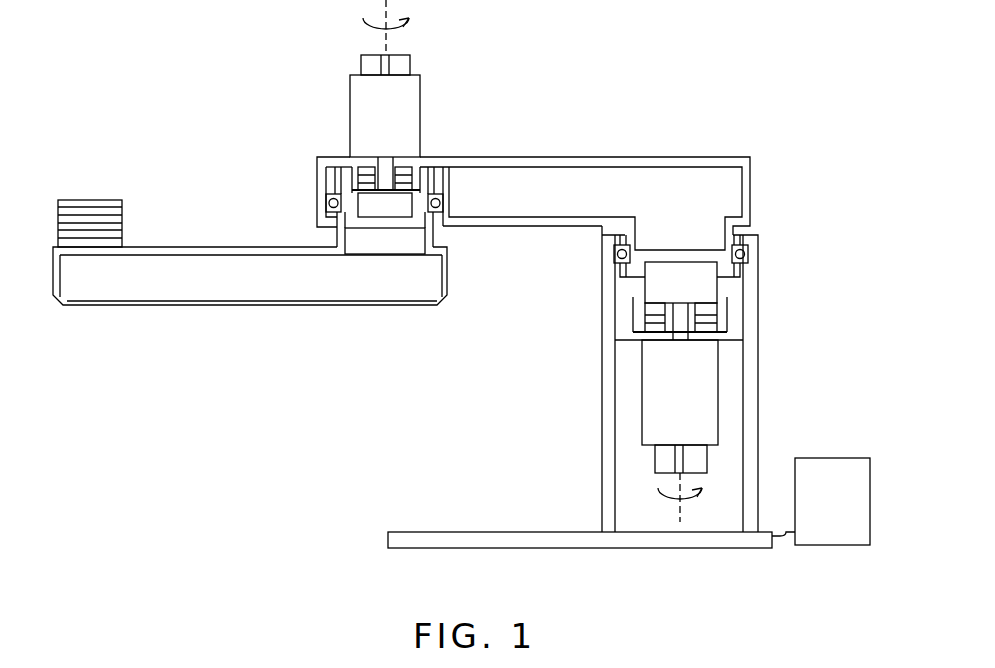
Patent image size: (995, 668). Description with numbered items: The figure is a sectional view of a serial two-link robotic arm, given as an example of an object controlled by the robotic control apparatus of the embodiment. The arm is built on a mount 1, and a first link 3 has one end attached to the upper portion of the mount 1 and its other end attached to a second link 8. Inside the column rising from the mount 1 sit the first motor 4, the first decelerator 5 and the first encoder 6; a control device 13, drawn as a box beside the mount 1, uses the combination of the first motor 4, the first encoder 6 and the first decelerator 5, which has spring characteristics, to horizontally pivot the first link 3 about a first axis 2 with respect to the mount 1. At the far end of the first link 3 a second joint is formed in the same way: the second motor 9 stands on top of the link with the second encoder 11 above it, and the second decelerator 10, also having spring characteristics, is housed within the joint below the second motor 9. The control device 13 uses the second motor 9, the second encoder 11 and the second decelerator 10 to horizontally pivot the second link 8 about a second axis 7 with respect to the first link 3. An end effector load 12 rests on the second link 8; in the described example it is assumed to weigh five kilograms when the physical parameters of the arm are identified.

The mount 1 is at (473, 532).
The first axis 2 is at (672, 515).
The first link 3 is at (513, 157).
The first motor 4 is at (642, 404).
The first decelerator 5 is at (645, 286).
The first encoder 6 is at (653, 461).
The second axis 7 is at (362, 21).
The second link 8 is at (247, 307).
The second motor 9 is at (350, 92).
The second decelerator 10 is at (383, 218).
The second encoder 11 is at (411, 66).
The end effector load 12 is at (88, 200).
The control device 13 is at (833, 458).